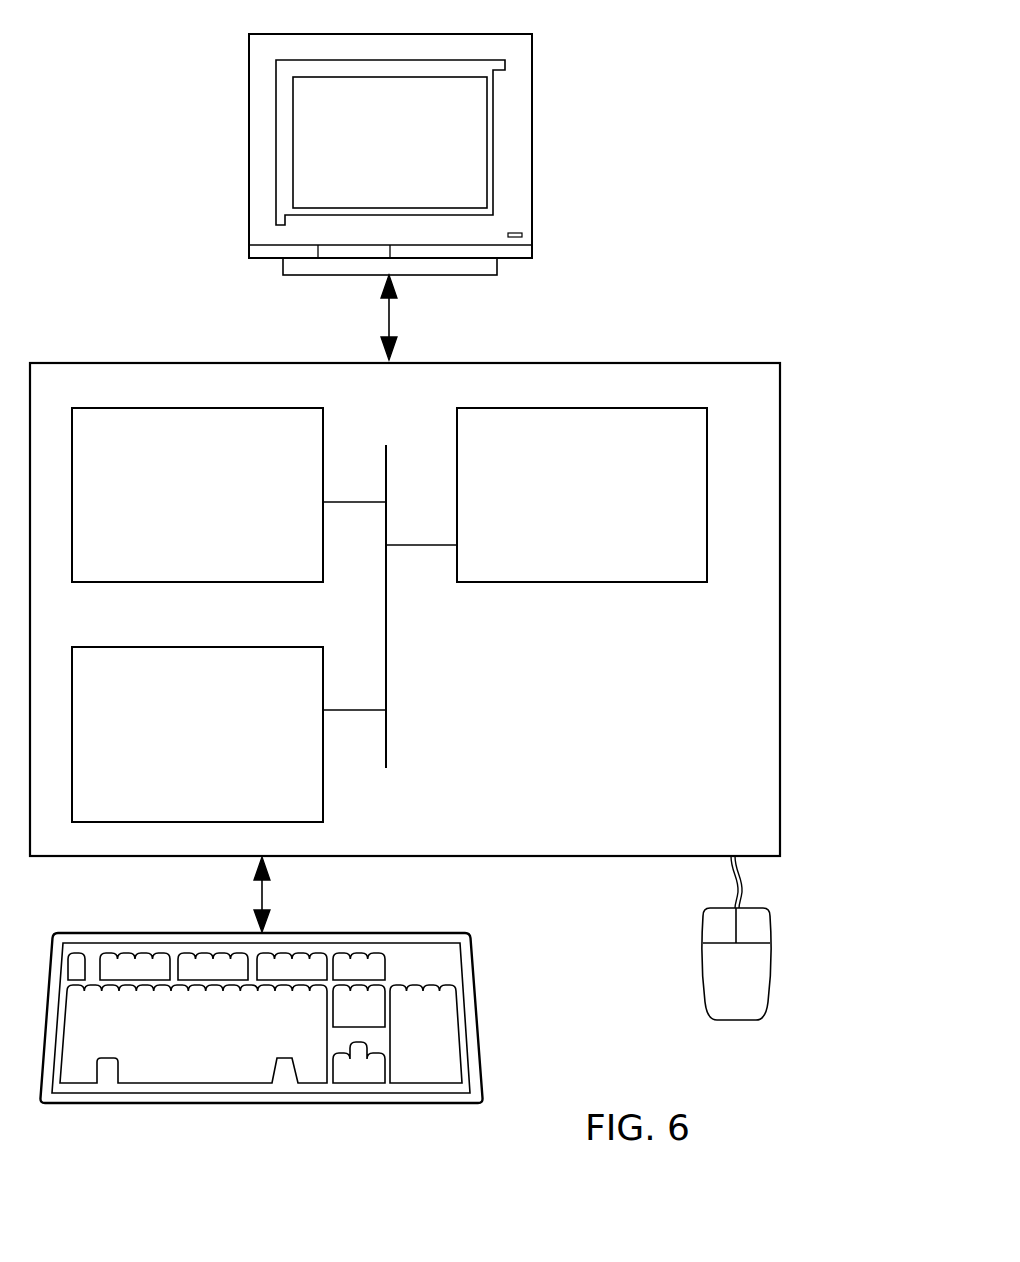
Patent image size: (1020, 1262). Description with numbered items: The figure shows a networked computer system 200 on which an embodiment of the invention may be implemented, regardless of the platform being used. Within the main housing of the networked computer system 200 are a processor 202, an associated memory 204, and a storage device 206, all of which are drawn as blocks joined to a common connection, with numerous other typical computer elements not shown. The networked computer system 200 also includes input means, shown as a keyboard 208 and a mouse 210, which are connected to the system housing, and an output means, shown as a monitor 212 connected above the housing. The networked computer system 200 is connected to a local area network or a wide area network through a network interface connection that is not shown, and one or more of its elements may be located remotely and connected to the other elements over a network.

The networked computer system 200 is at (463, 508).
The processor 202 is at (576, 506).
The memory 204 is at (173, 506).
The storage device 206 is at (168, 747).
The keyboard 208 is at (161, 1060).
The mouse 210 is at (712, 987).
The monitor 212 is at (366, 159).